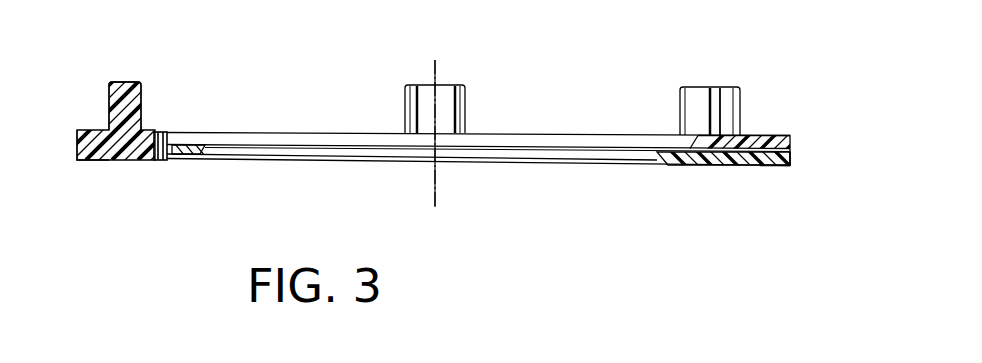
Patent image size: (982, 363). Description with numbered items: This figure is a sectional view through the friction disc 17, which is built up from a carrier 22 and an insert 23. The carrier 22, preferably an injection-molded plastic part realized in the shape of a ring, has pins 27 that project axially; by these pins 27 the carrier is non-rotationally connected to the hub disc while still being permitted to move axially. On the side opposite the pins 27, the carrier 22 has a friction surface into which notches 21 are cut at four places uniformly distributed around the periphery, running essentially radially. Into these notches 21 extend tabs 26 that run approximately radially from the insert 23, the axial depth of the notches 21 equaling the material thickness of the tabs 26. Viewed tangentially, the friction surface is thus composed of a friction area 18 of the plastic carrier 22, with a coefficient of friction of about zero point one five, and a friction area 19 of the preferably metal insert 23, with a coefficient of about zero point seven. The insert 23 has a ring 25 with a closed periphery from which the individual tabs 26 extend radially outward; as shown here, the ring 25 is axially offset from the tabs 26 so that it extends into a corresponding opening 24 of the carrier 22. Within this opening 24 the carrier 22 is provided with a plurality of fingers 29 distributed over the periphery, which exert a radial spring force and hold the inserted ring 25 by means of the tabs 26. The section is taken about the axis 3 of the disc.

The axis of rotation 3 is at (435, 183).
The friction disc 17 is at (594, 84).
The friction area 18 is at (145, 163).
The friction area 19 is at (741, 171).
The notches 21 is at (790, 141).
The carrier 22 is at (107, 148).
The insert 23 is at (549, 168).
The opening 24 is at (302, 132).
The ring 25 is at (195, 153).
The tabs 26 is at (790, 161).
The pins 27 is at (124, 90).
The fingers 29 is at (164, 132).